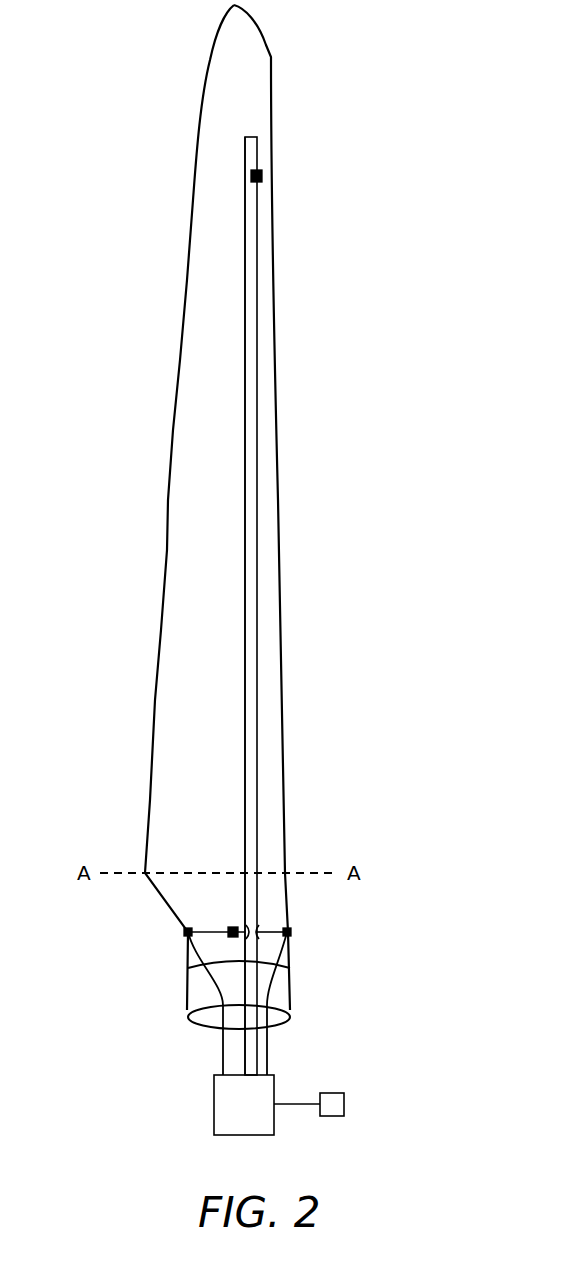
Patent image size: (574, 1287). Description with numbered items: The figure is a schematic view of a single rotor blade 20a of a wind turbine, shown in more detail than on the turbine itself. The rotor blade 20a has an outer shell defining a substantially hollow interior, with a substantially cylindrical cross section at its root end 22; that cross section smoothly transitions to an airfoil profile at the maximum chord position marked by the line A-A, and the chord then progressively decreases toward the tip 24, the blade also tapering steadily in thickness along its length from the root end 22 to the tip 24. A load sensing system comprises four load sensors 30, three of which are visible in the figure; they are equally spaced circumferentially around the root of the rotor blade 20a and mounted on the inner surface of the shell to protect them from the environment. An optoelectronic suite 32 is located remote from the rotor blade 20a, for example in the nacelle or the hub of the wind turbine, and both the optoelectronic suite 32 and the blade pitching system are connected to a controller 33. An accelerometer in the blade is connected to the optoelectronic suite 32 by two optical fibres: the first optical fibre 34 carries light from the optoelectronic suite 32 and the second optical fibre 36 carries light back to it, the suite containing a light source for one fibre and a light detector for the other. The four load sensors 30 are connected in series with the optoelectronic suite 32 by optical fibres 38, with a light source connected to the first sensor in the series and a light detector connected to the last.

The rotor blade 20a is at (170, 483).
The root end 22 is at (211, 1010).
The tip 24 is at (270, 507).
The load sensors 30 is at (188, 932).
The optoelectronic suite 32 is at (214, 1095).
The controller 33 is at (344, 1110).
The first optical fibre 34 is at (257, 328).
The second optical fibre 36 is at (245, 352).
The optical fibres 38 is at (223, 1045).